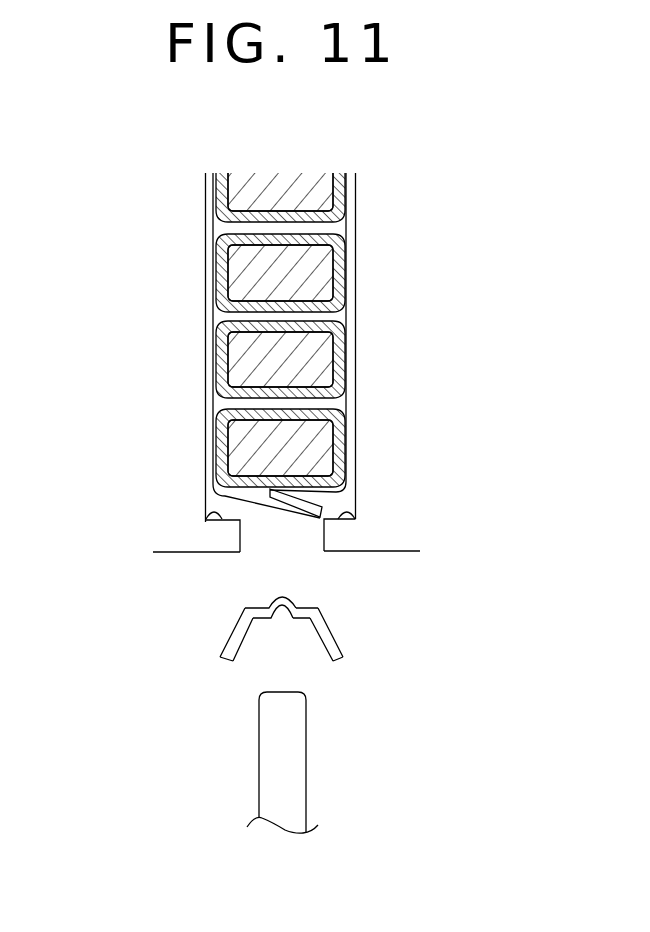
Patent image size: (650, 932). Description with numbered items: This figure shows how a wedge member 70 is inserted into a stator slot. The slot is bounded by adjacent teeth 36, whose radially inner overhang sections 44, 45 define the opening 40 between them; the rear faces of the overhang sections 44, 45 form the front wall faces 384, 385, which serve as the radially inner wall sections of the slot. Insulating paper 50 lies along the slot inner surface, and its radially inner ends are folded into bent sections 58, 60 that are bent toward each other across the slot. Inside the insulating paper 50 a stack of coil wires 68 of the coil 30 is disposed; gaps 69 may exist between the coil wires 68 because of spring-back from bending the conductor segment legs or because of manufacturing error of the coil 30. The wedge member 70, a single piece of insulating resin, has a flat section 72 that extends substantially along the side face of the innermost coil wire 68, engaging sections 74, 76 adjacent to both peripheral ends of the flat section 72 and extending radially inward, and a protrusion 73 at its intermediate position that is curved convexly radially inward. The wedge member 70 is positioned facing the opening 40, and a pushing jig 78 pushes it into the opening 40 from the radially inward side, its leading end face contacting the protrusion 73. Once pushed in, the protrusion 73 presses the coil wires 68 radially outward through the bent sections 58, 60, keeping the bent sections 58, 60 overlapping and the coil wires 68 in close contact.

The coil 30 is at (286, 176).
The teeth 36 is at (163, 553).
The opening 40 is at (298, 557).
The overhang section 44 is at (220, 536).
The overhang section 45 is at (343, 537).
The insulating paper 50 is at (203, 263).
The bent section 58 is at (212, 510).
The bent section 60 is at (330, 500).
The coil wires 68 is at (350, 196).
The gaps 69 is at (228, 228).
The wedge member 70 is at (289, 646).
The flat section 72 is at (306, 606).
The protrusion 73 is at (270, 596).
The engaging section 74 is at (227, 643).
The engaging section 76 is at (343, 642).
The pushing jig 78 is at (307, 767).
The front wall face 384 is at (205, 521).
The front wall face 385 is at (353, 513).